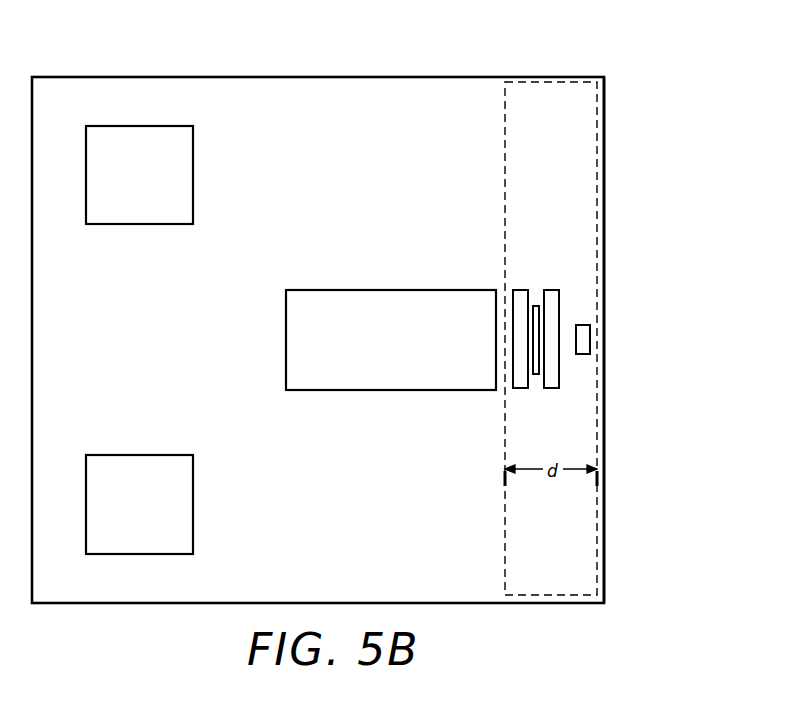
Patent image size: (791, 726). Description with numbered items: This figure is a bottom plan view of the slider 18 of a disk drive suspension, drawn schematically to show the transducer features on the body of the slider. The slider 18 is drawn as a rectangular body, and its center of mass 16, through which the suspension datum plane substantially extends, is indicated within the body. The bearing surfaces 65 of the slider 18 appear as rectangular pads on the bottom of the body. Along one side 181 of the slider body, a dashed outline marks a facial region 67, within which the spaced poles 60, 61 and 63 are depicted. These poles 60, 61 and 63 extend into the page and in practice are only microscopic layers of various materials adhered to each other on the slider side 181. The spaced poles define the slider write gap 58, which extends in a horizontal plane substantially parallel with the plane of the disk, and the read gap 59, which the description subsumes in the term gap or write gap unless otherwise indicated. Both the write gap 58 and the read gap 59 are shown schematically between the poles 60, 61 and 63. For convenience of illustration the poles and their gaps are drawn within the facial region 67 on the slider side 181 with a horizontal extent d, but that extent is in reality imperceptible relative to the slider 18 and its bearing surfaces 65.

The slider 18 is at (315, 77).
The slider side 181 is at (605, 184).
The facial region 67 is at (548, 103).
The bearing surfaces 65 is at (513, 368).
The center of mass 16 is at (310, 323).
The pole 63 is at (521, 288).
The read gap 59 is at (536, 300).
The pole 61 is at (556, 289).
The slider write gap 58 is at (567, 321).
The pole 60 is at (582, 342).